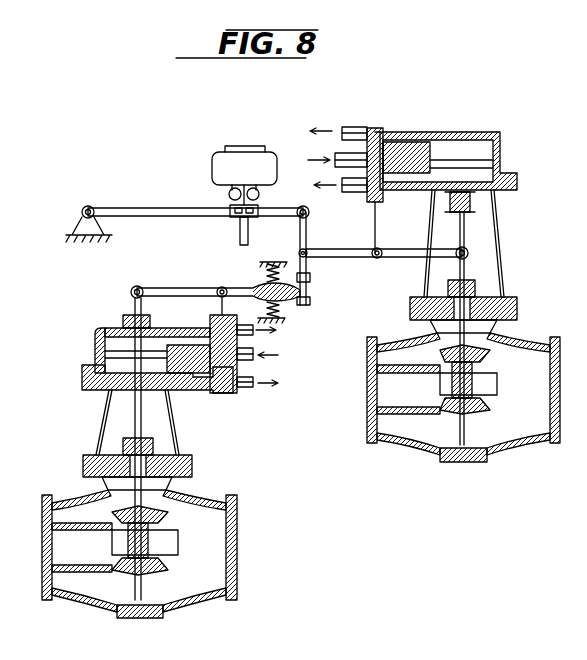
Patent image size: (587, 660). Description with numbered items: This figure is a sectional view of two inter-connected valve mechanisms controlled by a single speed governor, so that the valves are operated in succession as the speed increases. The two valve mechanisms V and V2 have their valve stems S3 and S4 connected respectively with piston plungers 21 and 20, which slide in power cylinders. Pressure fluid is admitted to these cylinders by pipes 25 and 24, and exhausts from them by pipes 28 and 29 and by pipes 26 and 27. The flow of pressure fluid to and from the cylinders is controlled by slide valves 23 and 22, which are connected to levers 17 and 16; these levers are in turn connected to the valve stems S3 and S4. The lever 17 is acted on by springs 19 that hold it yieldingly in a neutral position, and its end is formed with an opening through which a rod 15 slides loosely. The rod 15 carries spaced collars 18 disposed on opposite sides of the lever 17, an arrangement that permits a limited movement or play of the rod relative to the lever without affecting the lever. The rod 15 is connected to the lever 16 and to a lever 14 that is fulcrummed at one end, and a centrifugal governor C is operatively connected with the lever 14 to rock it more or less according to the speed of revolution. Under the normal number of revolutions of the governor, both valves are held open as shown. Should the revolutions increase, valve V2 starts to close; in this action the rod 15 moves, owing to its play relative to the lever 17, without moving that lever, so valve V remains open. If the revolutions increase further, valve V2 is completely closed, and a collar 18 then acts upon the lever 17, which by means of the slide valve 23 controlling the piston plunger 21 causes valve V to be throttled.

The lever 14 is at (158, 210).
The centrifugal governor C is at (244, 184).
The rod 15 is at (307, 236).
The lever 16 is at (396, 250).
The lever 17 is at (177, 289).
The collars 18 is at (311, 301).
The springs 19 is at (272, 293).
The piston plunger 20 is at (485, 165).
The piston plunger 21 is at (104, 340).
The slide valve 22 is at (390, 152).
The slide valve 23 is at (212, 360).
The pipe 24 is at (348, 154).
The pipe 25 is at (254, 352).
The pipe 26 is at (352, 127).
The pipe 27 is at (355, 185).
The pipe 28 is at (240, 326).
The pipe 29 is at (244, 386).
The valve stem S3 is at (143, 417).
The valve stem S4 is at (466, 226).
The valve mechanism V is at (198, 495).
The valve mechanism V2 is at (517, 340).